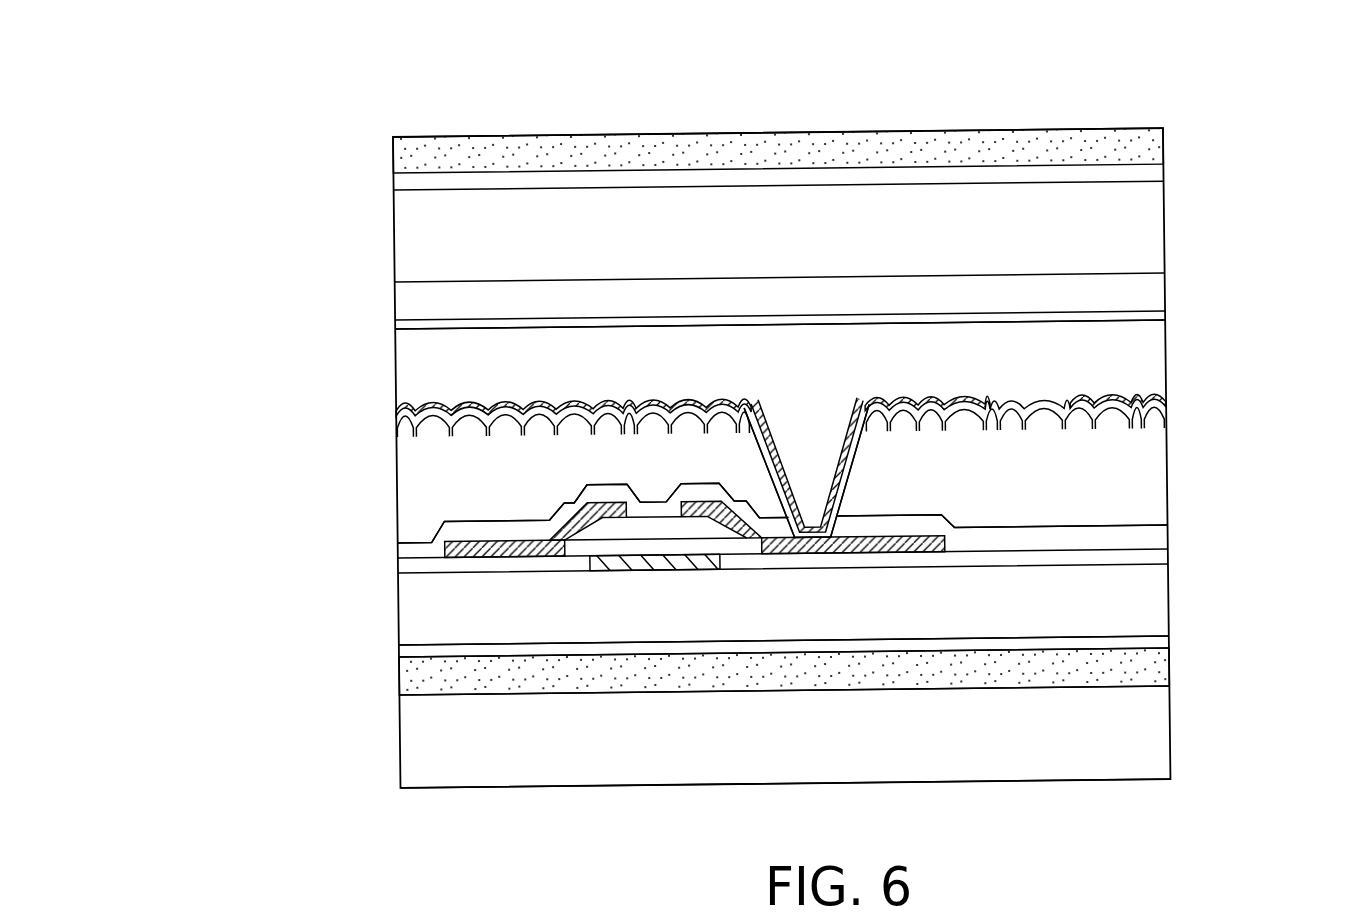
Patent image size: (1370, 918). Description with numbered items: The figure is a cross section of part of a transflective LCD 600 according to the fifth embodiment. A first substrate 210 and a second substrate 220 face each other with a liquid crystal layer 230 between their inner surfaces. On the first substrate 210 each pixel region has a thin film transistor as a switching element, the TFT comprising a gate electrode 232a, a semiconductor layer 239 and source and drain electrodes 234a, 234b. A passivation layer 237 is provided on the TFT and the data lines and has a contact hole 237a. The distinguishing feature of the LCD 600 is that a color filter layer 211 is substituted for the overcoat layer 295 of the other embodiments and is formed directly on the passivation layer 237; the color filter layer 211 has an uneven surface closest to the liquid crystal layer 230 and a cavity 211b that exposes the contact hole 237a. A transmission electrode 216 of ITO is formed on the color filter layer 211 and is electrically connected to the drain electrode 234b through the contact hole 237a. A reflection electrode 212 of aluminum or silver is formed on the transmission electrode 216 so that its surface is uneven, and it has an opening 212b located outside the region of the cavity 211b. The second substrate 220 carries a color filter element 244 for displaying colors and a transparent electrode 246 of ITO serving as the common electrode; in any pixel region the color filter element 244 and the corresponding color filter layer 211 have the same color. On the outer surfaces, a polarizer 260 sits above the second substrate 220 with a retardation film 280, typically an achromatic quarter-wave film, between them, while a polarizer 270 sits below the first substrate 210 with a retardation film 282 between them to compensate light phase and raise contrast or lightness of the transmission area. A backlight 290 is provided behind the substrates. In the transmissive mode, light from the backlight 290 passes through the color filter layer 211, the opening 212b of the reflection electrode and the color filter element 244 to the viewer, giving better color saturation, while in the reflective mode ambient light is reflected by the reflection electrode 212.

The transflective LCD 600 is at (258, 130).
The first substrate 210 is at (413, 617).
The color filter layer 211 is at (1143, 482).
The cavity 211b is at (853, 463).
The reflection electrode 212 is at (1162, 392).
The opening of the reflection electrode 212b is at (1073, 397).
The transmission electrode 216 is at (1162, 413).
The second substrate 220 is at (407, 247).
The liquid crystal layer 230 is at (407, 385).
The gate electrode 232a is at (690, 574).
The source electrode 234a is at (490, 560).
The drain electrode 234b is at (766, 560).
The passivation layer 237 is at (1158, 537).
The contact hole 237a is at (830, 528).
The semiconductor layer 239 is at (624, 520).
The color filter element 244 is at (822, 290).
The transparent electrode 246 is at (1158, 313).
The polarizer 260 is at (1070, 147).
The polarizer 270 is at (1160, 673).
The retardation film 280 is at (1160, 172).
The retardation film 282 is at (1158, 643).
The backlight 290 is at (1158, 742).
The overcoat layer 295 is at (408, 512).